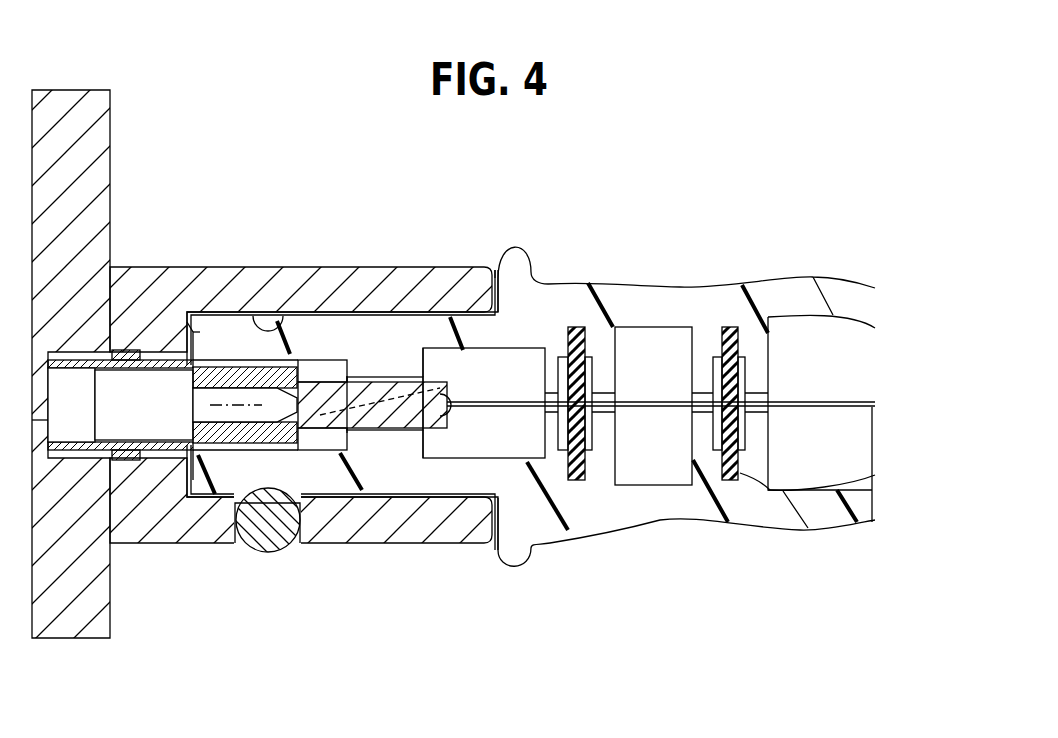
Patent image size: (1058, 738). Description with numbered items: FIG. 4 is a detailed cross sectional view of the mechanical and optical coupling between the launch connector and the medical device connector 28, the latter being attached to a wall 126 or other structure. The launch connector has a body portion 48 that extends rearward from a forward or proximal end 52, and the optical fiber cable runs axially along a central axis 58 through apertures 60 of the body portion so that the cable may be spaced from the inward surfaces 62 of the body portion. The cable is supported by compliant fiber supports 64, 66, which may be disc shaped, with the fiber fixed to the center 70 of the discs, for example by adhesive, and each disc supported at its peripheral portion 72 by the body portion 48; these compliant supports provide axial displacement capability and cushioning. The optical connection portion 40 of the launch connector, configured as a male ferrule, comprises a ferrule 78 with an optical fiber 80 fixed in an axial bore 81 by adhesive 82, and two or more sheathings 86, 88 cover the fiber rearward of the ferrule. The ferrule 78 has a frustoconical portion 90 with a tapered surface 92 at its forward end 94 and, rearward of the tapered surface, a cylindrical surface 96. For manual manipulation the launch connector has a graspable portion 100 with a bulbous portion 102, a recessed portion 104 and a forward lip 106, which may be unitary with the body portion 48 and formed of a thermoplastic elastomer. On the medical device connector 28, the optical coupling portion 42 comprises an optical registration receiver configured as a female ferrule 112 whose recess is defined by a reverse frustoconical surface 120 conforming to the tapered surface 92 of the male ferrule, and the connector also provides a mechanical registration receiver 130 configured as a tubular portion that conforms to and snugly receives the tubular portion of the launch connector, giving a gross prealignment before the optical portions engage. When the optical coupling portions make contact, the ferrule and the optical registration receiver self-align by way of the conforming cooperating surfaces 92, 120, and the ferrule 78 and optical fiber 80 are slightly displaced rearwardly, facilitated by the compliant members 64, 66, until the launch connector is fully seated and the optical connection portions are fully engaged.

The wall 126 is at (90, 143).
The medical device connector 28 is at (163, 267).
The female ferrule 112 is at (166, 362).
The optical connection portion 40 is at (348, 495).
The optical coupling portion 42 is at (205, 497).
The proximal end 52 is at (200, 365).
The central axis 58 is at (252, 365).
The mechanical registration receiver 130 is at (298, 368).
The forward end 94 is at (300, 382).
The cylindrical surface 96 is at (352, 362).
The axial bore 81 is at (440, 380).
The ferrule 78 is at (435, 445).
The optical fiber 80 is at (500, 417).
The adhesive 82 is at (508, 430).
The sheathing 86 is at (517, 420).
The forward lip 106 is at (500, 268).
The compliant fiber support 64 is at (572, 327).
The body portion 48 is at (620, 315).
The compliant fiber support 66 is at (735, 327).
The apertures 60 is at (622, 420).
The inward surfaces 62 is at (705, 420).
The center 70 is at (777, 418).
The peripheral portion 72 is at (747, 410).
The graspable portion 100 is at (716, 285).
The bulbous portion 102 is at (802, 278).
The recessed portion 104 is at (693, 285).
The sheathing 88 is at (875, 407).
The tapered surface 92 is at (212, 455).
The frustoconical portion 90 is at (190, 460).
The reverse frustoconical surface 120 is at (335, 445).